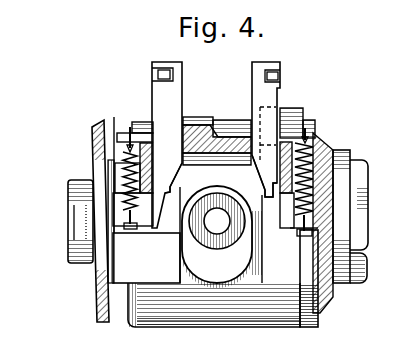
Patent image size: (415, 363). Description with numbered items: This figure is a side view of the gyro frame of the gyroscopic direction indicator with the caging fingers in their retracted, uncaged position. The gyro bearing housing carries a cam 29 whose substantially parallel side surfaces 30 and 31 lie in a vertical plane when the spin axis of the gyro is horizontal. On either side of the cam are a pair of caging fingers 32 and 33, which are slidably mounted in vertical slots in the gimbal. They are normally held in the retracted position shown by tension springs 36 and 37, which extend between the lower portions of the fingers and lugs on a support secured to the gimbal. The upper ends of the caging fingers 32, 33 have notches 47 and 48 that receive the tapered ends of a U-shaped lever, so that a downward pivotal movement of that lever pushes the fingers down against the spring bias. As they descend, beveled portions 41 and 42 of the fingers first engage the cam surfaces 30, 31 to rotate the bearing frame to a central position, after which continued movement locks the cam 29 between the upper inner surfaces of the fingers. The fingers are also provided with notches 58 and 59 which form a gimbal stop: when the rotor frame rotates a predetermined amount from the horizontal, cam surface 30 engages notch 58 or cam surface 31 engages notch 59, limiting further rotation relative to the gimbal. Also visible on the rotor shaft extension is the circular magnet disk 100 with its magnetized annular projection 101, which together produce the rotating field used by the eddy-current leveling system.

The circular magnet disk 100 is at (95, 130).
The annular projection 101 is at (70, 219).
The tension spring 36 is at (136, 161).
The notch 47 is at (168, 72).
The caging finger 32 is at (180, 145).
The notch 48 is at (270, 76).
The caging finger 33 is at (279, 129).
The tension spring 37 is at (315, 150).
The beveled portion 41 is at (177, 184).
The beveled portion 42 is at (259, 183).
The notch 58 is at (157, 197).
The notch 59 is at (265, 197).
The cam 29 is at (182, 250).
The cam surface 30 is at (183, 261).
The cam surface 31 is at (256, 252).